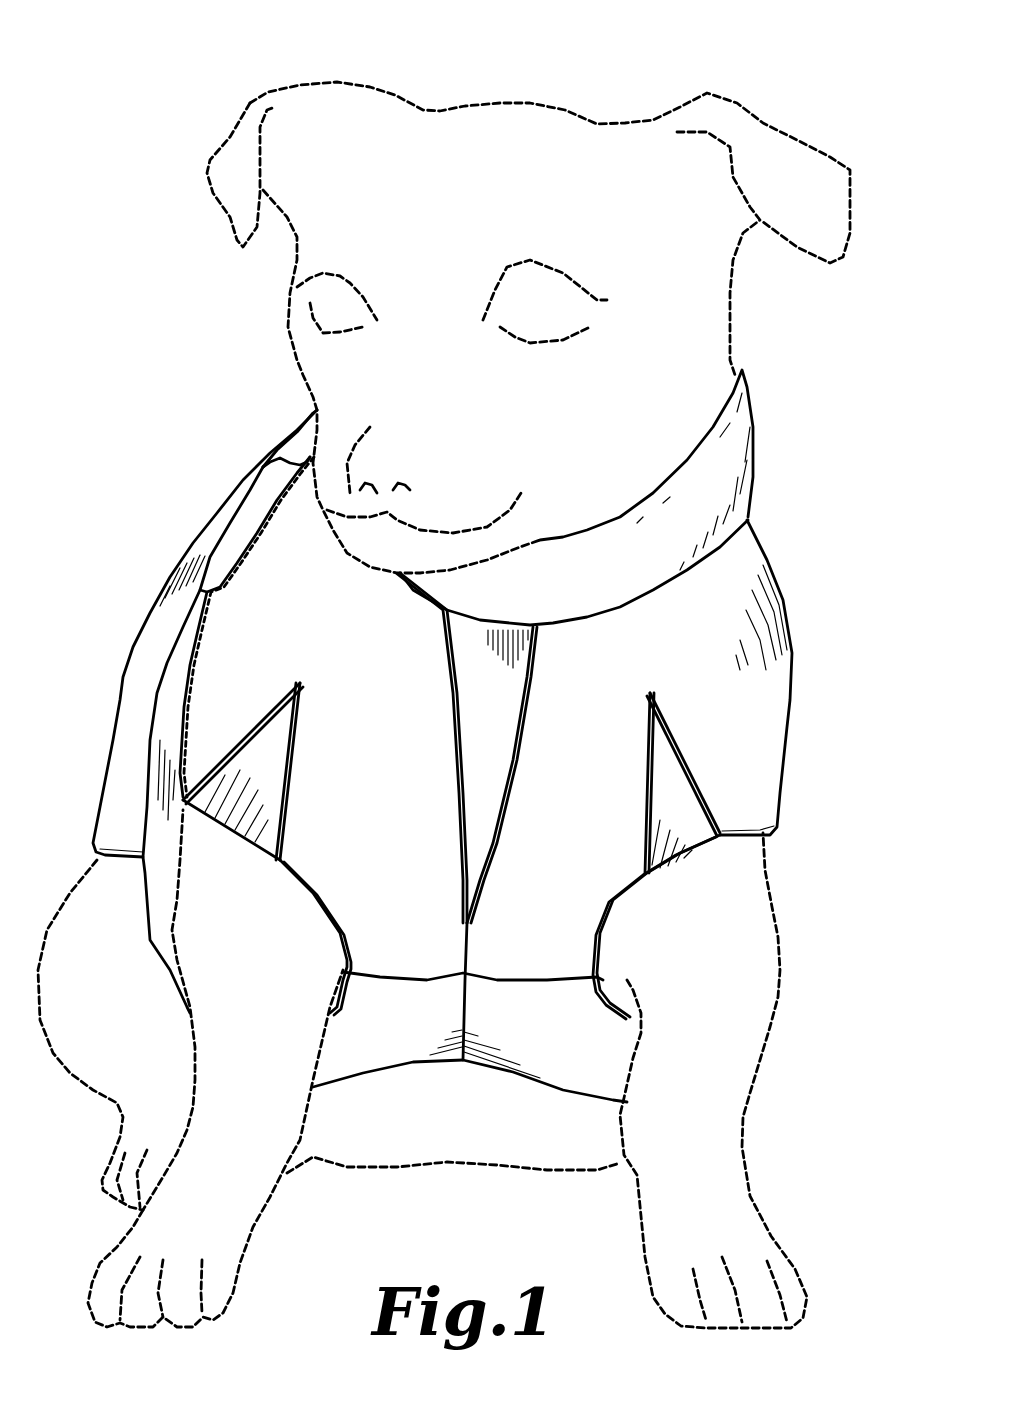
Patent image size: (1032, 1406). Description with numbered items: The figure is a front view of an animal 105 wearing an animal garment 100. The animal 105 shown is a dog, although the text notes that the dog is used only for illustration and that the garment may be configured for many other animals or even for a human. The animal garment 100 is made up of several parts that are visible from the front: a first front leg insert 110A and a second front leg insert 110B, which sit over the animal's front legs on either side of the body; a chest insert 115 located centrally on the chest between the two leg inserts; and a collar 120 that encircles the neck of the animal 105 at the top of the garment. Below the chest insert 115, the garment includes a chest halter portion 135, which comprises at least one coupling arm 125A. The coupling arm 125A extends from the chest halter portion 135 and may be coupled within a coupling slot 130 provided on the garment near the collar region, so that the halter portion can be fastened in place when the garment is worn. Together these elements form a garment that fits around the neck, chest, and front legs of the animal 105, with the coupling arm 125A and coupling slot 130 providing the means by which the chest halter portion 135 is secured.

The animal garment 100 is at (422, 755).
The animal 105 is at (464, 666).
The first front leg insert 110A is at (265, 849).
The second front leg insert 110B is at (672, 856).
The chest insert 115 is at (437, 816).
The collar 120 is at (533, 519).
The coupling arm 125A is at (235, 735).
The coupling slot 130 is at (246, 417).
The chest halter portion 135 is at (470, 1087).